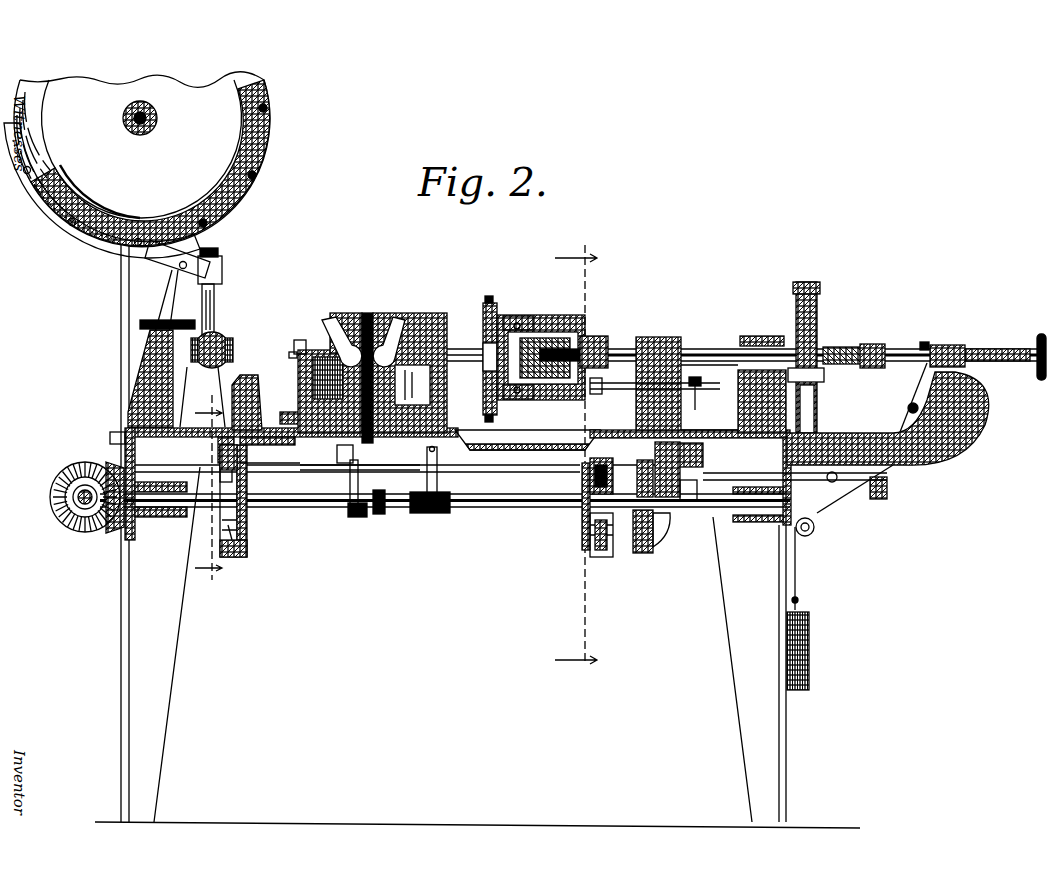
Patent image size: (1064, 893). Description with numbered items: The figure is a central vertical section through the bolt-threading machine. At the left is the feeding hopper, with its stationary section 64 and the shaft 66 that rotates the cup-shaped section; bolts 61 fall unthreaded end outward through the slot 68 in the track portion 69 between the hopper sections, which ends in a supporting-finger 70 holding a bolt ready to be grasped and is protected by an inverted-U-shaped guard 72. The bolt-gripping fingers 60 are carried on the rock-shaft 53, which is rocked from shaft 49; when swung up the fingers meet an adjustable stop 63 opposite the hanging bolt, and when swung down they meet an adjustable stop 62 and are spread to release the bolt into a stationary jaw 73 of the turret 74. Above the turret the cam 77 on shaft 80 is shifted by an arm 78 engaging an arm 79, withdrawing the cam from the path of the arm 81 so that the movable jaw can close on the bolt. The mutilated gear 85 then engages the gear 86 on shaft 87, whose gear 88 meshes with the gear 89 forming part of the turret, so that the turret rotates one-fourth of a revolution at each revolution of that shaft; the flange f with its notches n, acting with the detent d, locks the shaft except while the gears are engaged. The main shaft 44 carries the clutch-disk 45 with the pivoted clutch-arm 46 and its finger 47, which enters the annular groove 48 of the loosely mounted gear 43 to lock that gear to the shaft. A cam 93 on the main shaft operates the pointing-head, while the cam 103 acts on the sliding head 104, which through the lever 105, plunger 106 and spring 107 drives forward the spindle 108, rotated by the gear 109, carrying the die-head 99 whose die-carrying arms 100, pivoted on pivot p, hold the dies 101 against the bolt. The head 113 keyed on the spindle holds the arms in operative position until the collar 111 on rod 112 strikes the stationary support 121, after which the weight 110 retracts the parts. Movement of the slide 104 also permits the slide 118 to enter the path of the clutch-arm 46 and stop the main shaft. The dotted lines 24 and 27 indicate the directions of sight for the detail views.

The stationary section 64 is at (222, 100).
The shaft 66 is at (148, 130).
The inverted-U-shaped guard 72 is at (92, 212).
The slot 68 is at (60, 195).
The track portion 69 is at (85, 232).
The supporting-finger 70 is at (225, 255).
The bolt 61 is at (222, 268).
The bolt-gripping finger 60 is at (214, 305).
The rock-shaft 53 is at (226, 343).
The adjustable stop 63 is at (150, 346).
The stationary jaw 73 is at (296, 348).
The arm 81 is at (333, 335).
The cam 77 is at (348, 322).
The shaft 80 is at (370, 320).
The turret 74 is at (415, 362).
The die 101 is at (480, 336).
The die-carrying arm 100 is at (535, 318).
The die-head 99 is at (553, 337).
The pivot p is at (517, 324).
The dotted line 27 is at (576, 464).
The head 113 is at (605, 338).
The stationary support 121 is at (660, 352).
The spindle 108 is at (708, 350).
The gear 109 is at (805, 282).
The spring 107 is at (855, 347).
The plunger 106 is at (907, 352).
The lever 105 is at (913, 390).
The sliding head 104 is at (705, 448).
The collar 111 is at (697, 390).
The rod 112 is at (617, 392).
The adjustable stop 62 is at (242, 376).
The gear 89 is at (305, 386).
The gear 88 is at (303, 414).
The dotted line 24 is at (210, 493).
The detent d is at (222, 440).
The shaft 87 is at (252, 444).
The arm 79 is at (337, 456).
The gear 86 is at (244, 465).
The arm 78 is at (350, 480).
The shaft 49 is at (58, 516).
The main shaft 44 is at (116, 522).
The notches n is at (232, 532).
The flange f is at (228, 555).
The mutilated gear 85 is at (247, 540).
The cam 93 is at (382, 514).
The clutch-disk 45 is at (582, 530).
The clutch-arm 46 is at (588, 560).
The finger 47 is at (602, 548).
The gear 43 is at (608, 548).
The annular groove 48 is at (612, 540).
The slide 118 is at (692, 512).
The cam 103 is at (660, 548).
The weight 110 is at (808, 656).